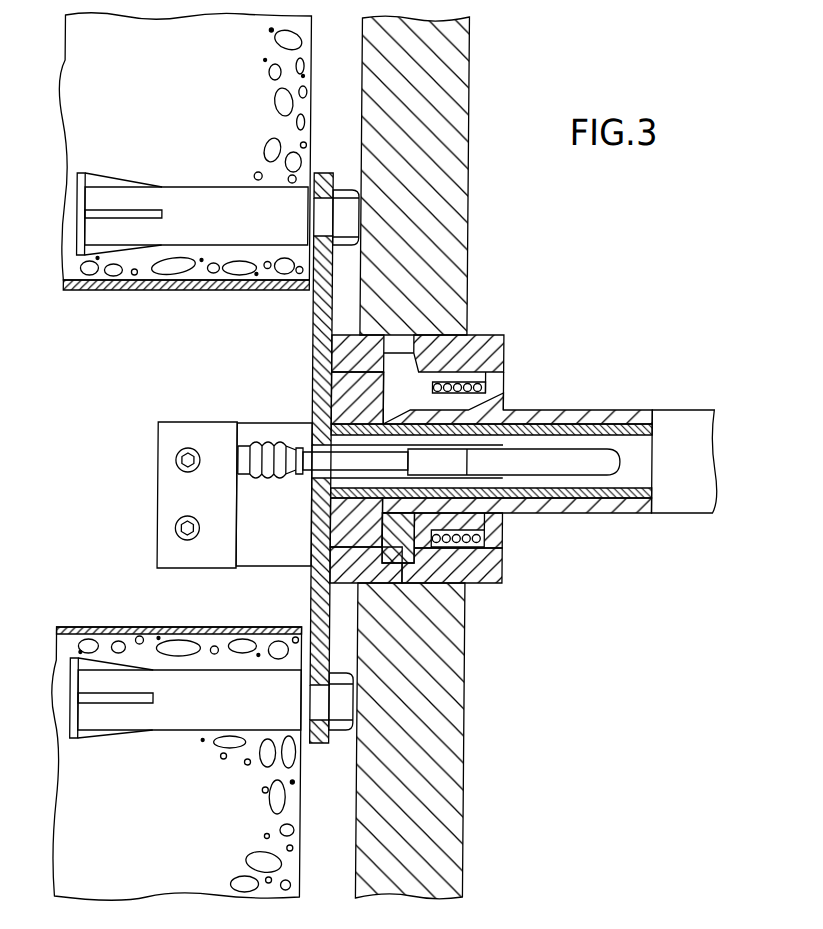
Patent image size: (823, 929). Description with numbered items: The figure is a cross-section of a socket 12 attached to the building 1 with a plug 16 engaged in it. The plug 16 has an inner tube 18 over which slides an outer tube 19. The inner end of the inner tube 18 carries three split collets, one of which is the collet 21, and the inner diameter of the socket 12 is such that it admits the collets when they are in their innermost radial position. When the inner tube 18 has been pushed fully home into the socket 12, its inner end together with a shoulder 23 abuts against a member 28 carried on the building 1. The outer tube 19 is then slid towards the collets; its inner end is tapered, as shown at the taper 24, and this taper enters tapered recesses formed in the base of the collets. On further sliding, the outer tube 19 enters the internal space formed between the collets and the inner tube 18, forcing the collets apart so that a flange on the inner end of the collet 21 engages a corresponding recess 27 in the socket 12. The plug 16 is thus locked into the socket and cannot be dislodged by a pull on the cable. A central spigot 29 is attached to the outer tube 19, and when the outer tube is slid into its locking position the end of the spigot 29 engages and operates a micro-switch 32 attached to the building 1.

The building 1 is at (458, 208).
The socket 12 is at (487, 345).
The plug 16 is at (486, 472).
The inner tube 18 is at (580, 513).
The outer tube 19 is at (606, 412).
The split collet 21 is at (410, 558).
The shoulder 23 is at (333, 398).
The taper 24 is at (393, 420).
The recess 27 is at (403, 580).
The member 28 is at (312, 304).
The central spigot 29 is at (317, 458).
The micro-switch 32 is at (185, 425).